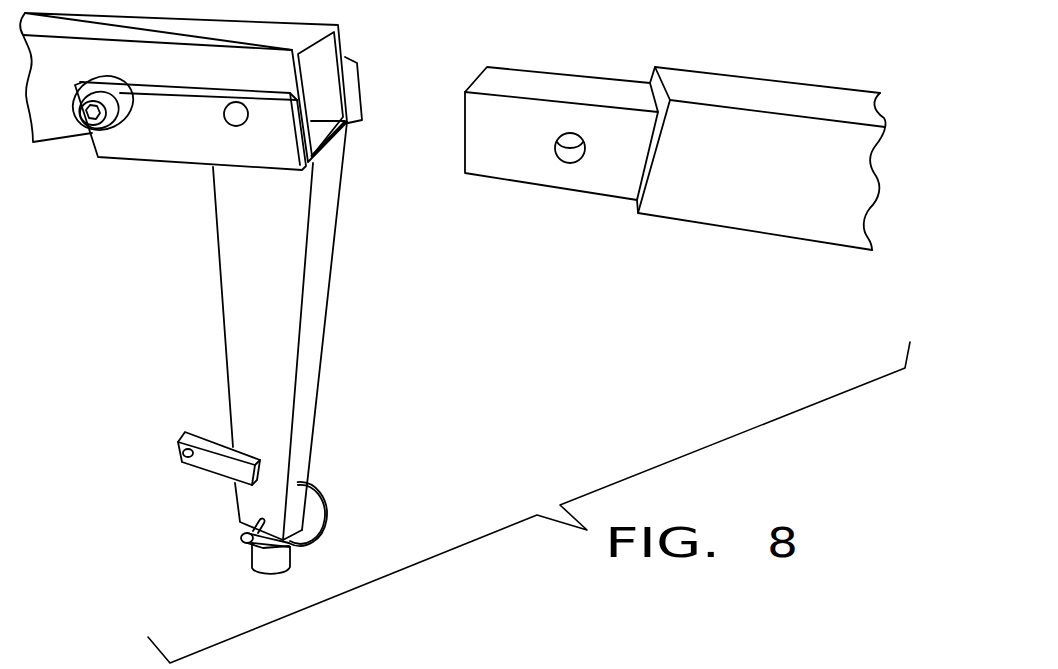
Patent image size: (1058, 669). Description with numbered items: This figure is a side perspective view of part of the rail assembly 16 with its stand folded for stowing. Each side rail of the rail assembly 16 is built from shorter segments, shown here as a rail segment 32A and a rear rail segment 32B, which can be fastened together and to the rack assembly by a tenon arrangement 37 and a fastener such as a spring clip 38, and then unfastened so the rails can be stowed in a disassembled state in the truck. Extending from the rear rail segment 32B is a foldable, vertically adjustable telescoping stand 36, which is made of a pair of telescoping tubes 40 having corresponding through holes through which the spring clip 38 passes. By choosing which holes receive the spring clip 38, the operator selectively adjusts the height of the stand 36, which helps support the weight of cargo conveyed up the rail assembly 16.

The rail assembly 16 is at (674, 194).
The rail segment 32A is at (743, 188).
The rear rail segment 32B is at (183, 127).
The telescoping stand 36 is at (334, 326).
The tenon arrangement 37 is at (515, 143).
The spring clip 38 is at (322, 530).
The telescoping tubes 40 is at (304, 382).